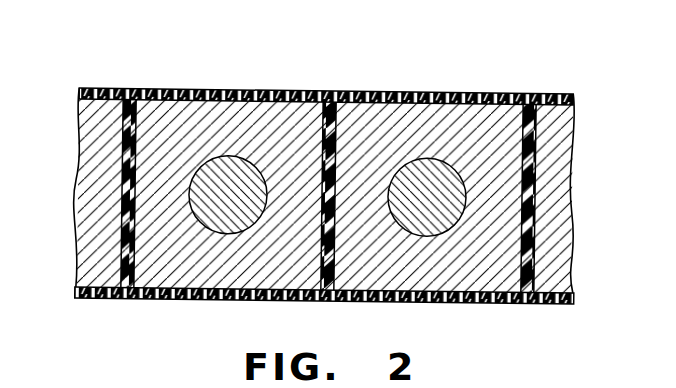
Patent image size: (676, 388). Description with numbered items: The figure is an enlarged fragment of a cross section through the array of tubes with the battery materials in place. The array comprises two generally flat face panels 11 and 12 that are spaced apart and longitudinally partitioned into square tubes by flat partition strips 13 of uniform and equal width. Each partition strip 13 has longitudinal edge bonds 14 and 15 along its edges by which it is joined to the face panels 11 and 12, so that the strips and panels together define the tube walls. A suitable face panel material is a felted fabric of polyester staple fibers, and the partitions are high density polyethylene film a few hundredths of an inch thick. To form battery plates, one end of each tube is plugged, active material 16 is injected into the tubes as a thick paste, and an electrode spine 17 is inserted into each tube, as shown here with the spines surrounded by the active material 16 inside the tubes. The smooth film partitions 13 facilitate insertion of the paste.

The face panel 11 is at (441, 93).
The face panel 12 is at (412, 303).
The partition strip 13 is at (135, 131).
The longitudinal edge bond 14 is at (127, 92).
The longitudinal edge bond 15 is at (125, 298).
The active material 16 is at (267, 271).
The electrode spine 17 is at (237, 170).